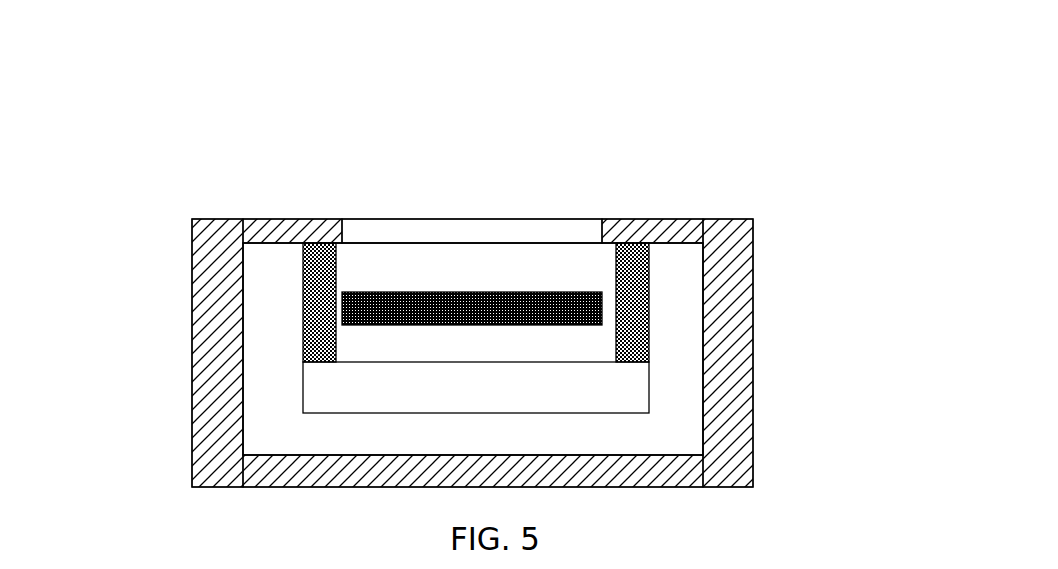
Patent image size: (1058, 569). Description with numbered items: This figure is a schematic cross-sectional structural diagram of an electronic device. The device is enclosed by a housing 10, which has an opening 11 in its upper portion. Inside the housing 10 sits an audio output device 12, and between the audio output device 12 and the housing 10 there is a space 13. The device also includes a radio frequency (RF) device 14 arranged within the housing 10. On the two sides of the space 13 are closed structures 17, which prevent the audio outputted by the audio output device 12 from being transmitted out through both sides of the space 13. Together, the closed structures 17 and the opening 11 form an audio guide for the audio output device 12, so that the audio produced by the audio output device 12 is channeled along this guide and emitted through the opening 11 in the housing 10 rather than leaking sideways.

The housing 10 is at (575, 271).
The opening 11 is at (410, 225).
The audio output device 12 is at (613, 427).
The space 13 is at (597, 298).
The radio frequency (RF) device 14 is at (324, 236).
The closed structures 17 is at (632, 308).